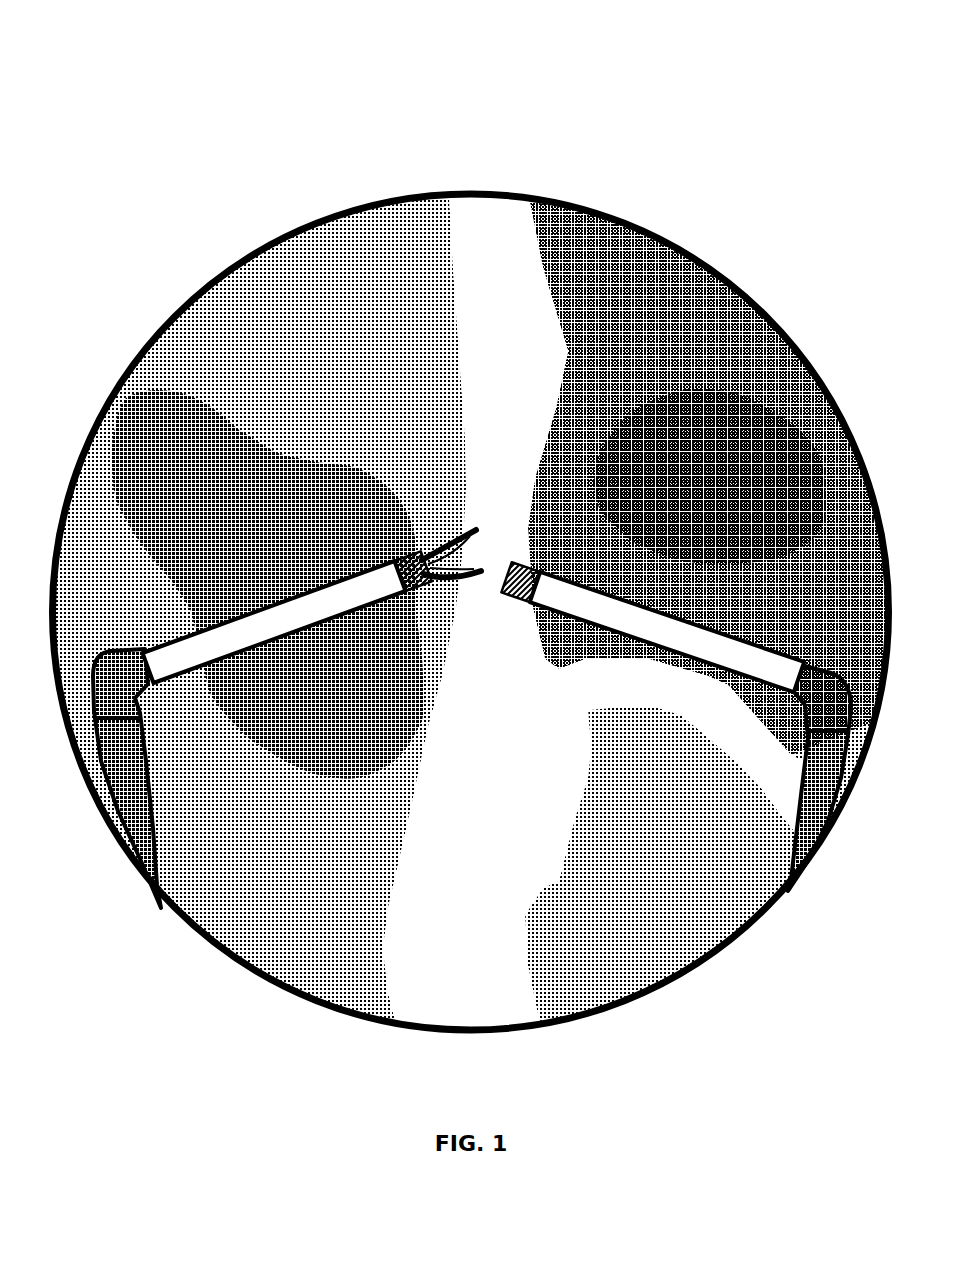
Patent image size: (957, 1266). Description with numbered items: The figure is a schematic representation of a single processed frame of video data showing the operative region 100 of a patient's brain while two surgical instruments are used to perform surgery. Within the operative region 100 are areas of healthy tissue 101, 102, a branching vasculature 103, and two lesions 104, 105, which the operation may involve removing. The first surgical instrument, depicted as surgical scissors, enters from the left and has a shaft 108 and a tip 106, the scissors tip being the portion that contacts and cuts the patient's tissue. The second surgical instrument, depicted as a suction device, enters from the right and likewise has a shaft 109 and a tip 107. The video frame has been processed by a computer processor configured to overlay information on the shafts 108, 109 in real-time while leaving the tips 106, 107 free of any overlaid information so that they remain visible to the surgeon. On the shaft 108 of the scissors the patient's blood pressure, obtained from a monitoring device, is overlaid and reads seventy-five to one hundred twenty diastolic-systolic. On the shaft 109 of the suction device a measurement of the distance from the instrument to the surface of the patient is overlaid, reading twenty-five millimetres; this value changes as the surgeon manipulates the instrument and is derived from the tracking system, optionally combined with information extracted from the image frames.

The operative region 100 is at (226, 260).
The healthy tissue 101 is at (647, 288).
The healthy tissue 102 is at (348, 312).
The vasculature 103 is at (478, 233).
The lesion 104 is at (157, 433).
The lesion 105 is at (722, 415).
The tip 106 is at (414, 545).
The tip 107 is at (520, 548).
The shaft 108 is at (158, 628).
The shaft 109 is at (775, 657).